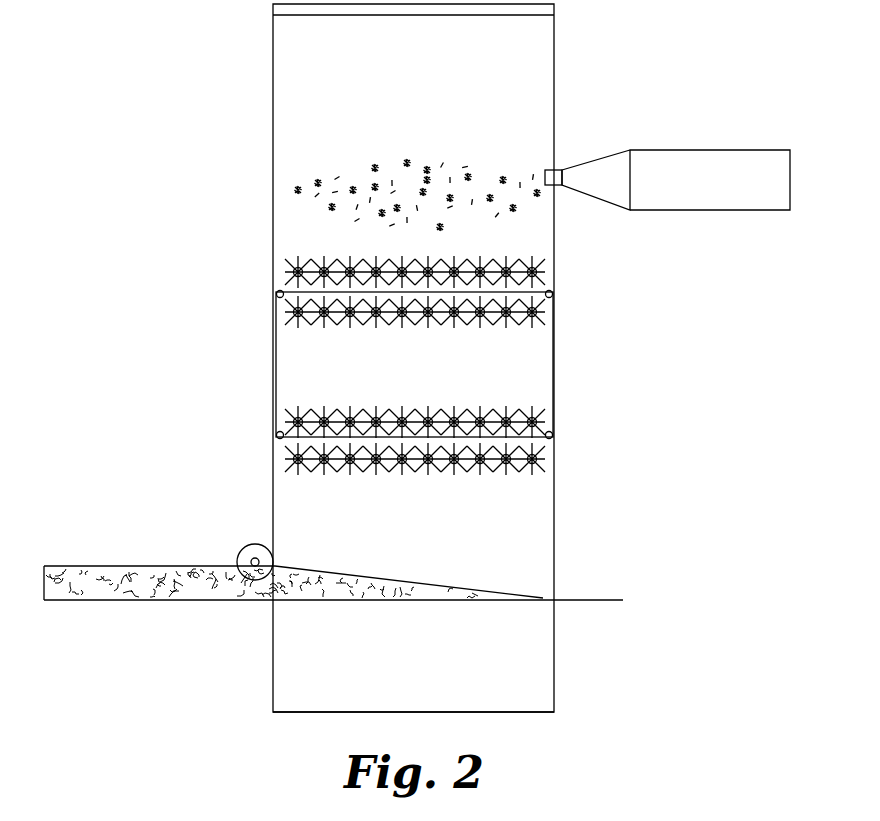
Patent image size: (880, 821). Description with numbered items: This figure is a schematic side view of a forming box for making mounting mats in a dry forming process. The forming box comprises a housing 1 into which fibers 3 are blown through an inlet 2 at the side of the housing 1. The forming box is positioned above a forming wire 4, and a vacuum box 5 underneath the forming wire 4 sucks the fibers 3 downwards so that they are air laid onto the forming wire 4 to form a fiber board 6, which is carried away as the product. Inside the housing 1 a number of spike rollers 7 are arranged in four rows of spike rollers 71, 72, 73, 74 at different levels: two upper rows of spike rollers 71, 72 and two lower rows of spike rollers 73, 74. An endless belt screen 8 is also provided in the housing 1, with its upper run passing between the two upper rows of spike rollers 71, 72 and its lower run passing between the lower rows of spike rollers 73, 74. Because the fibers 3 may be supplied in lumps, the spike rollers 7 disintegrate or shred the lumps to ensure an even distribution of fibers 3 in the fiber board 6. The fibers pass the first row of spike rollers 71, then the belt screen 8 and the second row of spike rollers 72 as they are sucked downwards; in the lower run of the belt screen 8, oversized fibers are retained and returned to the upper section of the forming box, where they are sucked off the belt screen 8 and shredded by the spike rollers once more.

The housing 1 is at (543, 50).
The inlet 2 is at (707, 157).
The fibers 3 is at (305, 172).
The forming wire 4 is at (595, 600).
The vacuum box 5 is at (545, 686).
The fiber board 6 is at (122, 600).
The spike rollers 7 is at (256, 213).
The endless belt screen 8 is at (276, 291).
The first row of spike rollers 71 is at (292, 270).
The second row of spike rollers 72 is at (292, 312).
The third row of spike rollers 73 is at (292, 421).
The fourth row of spike rollers 74 is at (292, 462).